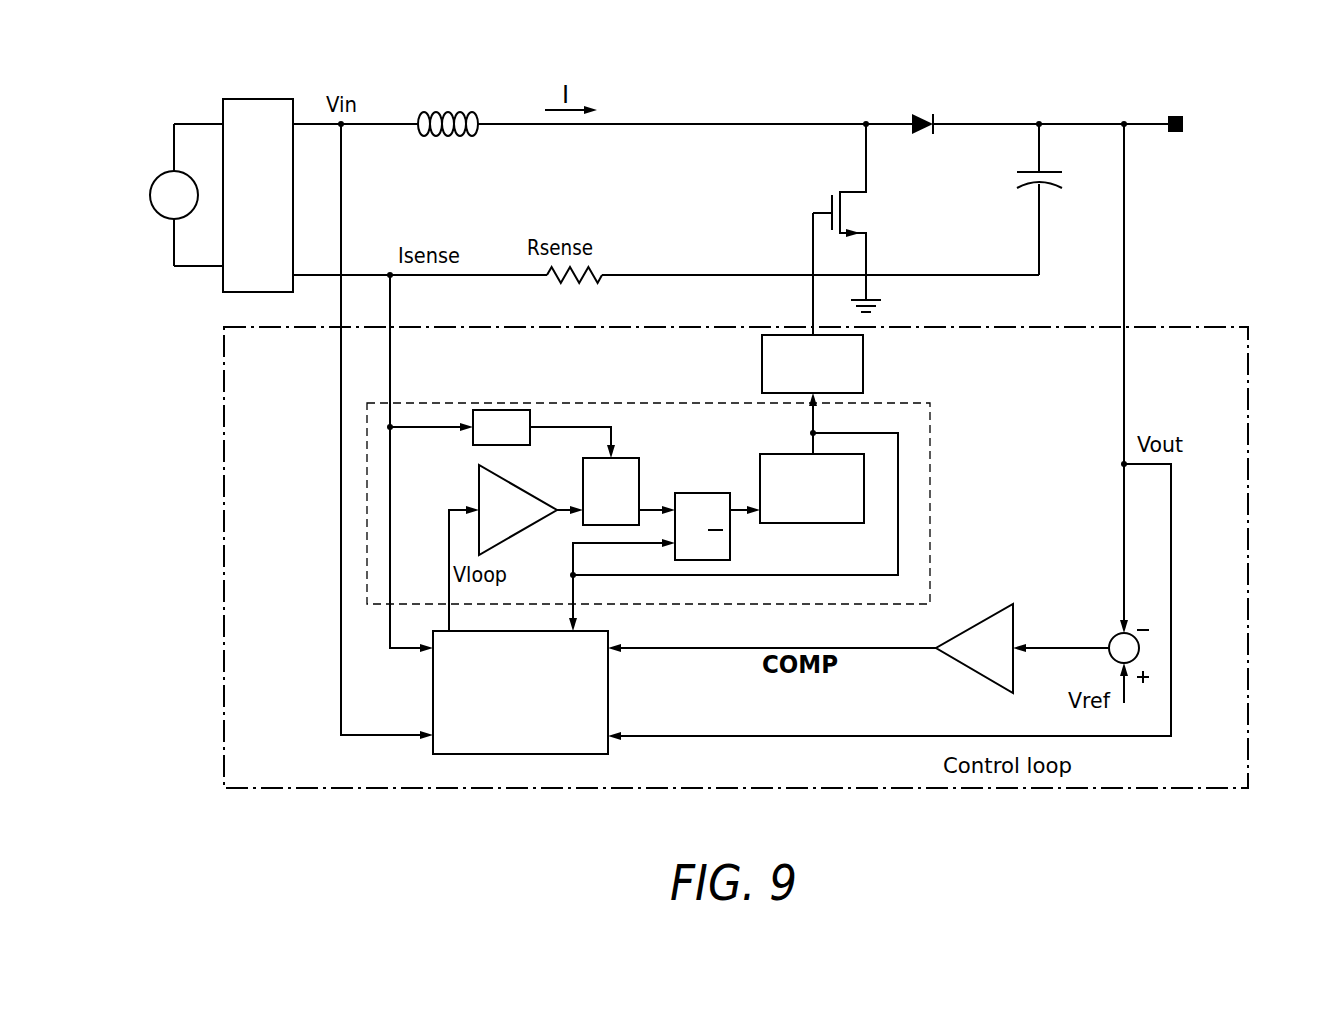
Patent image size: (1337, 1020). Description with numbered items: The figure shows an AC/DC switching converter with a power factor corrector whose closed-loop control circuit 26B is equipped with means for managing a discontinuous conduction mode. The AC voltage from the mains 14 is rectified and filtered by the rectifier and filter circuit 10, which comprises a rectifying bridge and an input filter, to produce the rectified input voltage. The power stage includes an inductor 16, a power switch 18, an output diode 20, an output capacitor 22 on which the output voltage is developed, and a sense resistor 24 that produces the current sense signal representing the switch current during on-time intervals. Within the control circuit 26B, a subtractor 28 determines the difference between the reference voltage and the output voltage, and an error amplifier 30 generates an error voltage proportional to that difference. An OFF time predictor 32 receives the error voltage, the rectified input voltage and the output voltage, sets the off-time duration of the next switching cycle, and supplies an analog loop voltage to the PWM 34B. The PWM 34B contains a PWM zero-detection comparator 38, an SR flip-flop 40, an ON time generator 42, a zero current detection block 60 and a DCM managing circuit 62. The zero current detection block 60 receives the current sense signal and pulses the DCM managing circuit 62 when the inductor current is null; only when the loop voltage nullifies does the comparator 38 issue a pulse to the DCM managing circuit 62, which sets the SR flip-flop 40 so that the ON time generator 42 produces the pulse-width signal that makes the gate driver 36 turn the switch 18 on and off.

The rectifier and filter circuit 10 is at (258, 99).
The mains 14 is at (150, 195).
The inductor 16 is at (445, 112).
The power switch 18 is at (853, 190).
The output diode 20 is at (923, 114).
The output capacitor 22 is at (1027, 172).
The sense resistor 24 is at (590, 275).
The closed-loop control circuit 26B is at (1248, 470).
The subtractor 28 is at (1113, 637).
The error amplifier 30 is at (970, 620).
The OFF time predictor 32 is at (608, 690).
The PWM 34B is at (605, 403).
The gate driver 36 is at (863, 362).
The PWM zero-detection comparator 38 is at (517, 538).
The SR flip-flop 40 is at (702, 493).
The ON time generator 42 is at (785, 454).
The zero current detection block 60 is at (502, 410).
The DCM managing circuit 62 is at (622, 458).